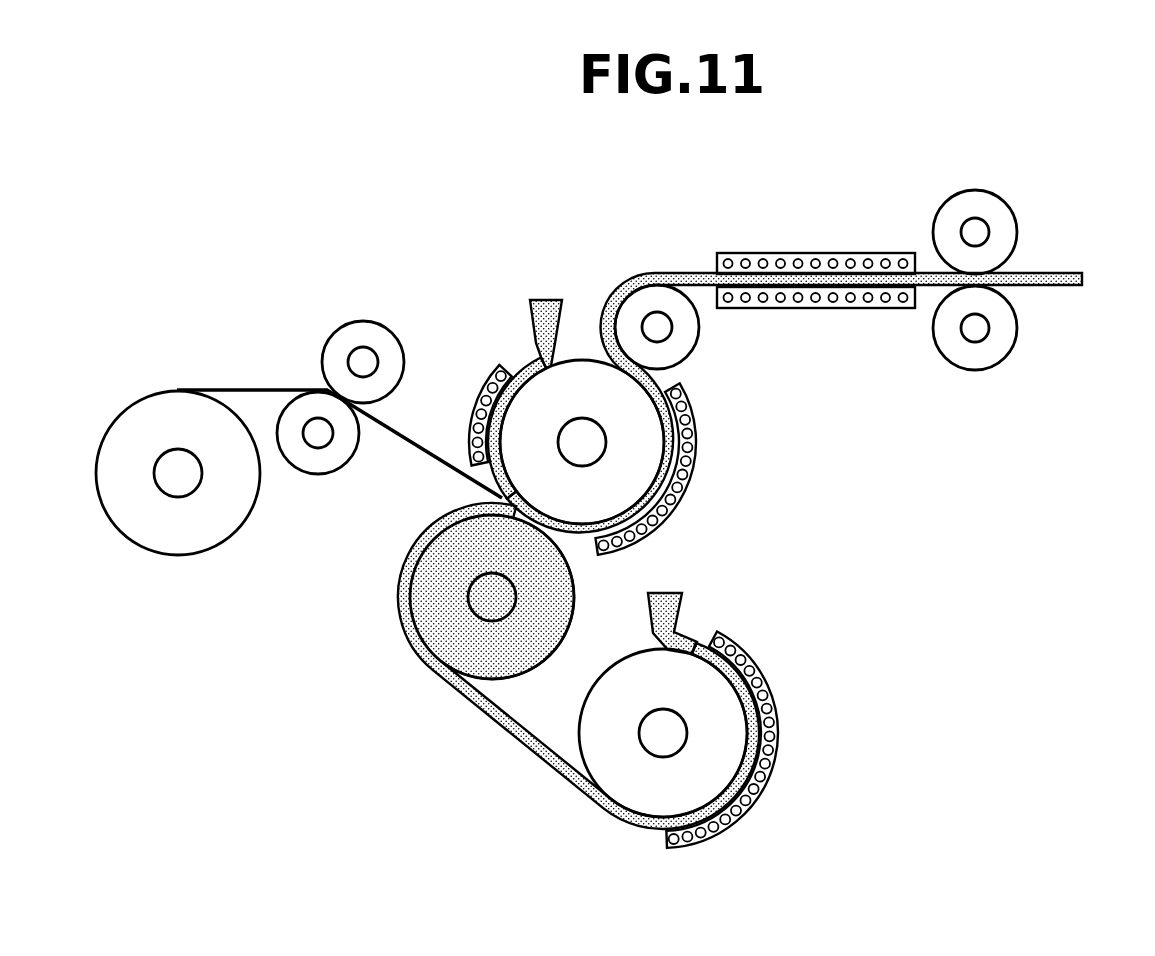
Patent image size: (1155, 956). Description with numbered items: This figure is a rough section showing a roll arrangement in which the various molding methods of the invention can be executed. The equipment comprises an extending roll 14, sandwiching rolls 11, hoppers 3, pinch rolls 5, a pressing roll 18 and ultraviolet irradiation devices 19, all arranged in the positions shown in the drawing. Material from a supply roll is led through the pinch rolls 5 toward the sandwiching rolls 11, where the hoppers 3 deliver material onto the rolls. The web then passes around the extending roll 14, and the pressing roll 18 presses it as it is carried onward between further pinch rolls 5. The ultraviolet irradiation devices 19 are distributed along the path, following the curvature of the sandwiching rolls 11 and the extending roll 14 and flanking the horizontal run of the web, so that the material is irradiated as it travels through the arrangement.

The hopper 3 is at (532, 320).
The pinch roll 5 is at (348, 325).
The sandwiching roll 11 is at (650, 447).
The extending roll 14 is at (610, 777).
The pressing roll 18 is at (685, 337).
The ultraviolet irradiation device 19 is at (790, 253).